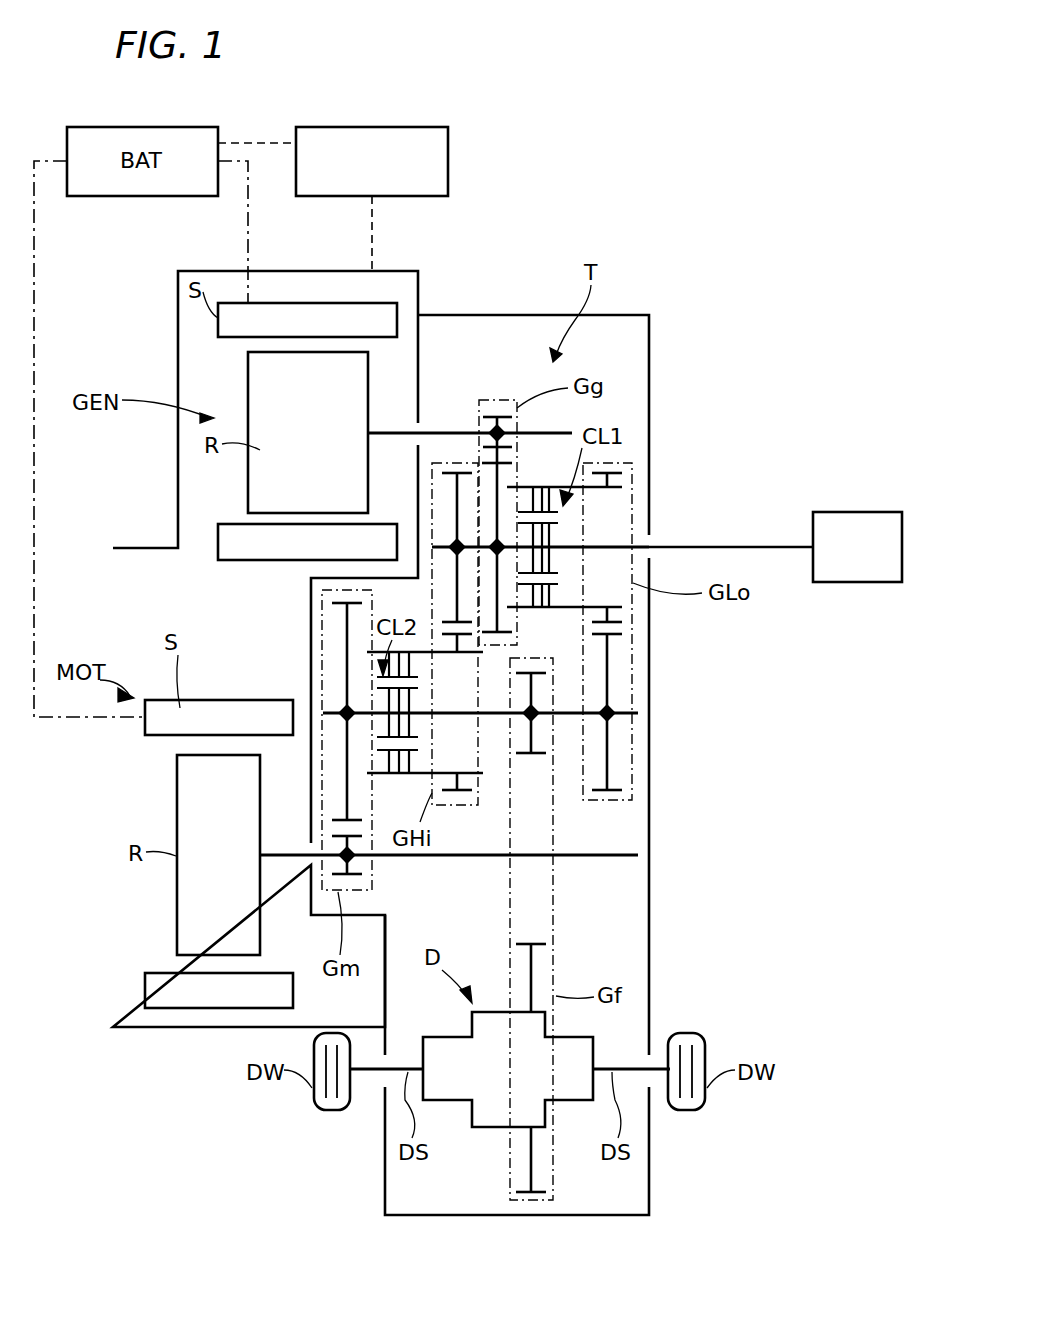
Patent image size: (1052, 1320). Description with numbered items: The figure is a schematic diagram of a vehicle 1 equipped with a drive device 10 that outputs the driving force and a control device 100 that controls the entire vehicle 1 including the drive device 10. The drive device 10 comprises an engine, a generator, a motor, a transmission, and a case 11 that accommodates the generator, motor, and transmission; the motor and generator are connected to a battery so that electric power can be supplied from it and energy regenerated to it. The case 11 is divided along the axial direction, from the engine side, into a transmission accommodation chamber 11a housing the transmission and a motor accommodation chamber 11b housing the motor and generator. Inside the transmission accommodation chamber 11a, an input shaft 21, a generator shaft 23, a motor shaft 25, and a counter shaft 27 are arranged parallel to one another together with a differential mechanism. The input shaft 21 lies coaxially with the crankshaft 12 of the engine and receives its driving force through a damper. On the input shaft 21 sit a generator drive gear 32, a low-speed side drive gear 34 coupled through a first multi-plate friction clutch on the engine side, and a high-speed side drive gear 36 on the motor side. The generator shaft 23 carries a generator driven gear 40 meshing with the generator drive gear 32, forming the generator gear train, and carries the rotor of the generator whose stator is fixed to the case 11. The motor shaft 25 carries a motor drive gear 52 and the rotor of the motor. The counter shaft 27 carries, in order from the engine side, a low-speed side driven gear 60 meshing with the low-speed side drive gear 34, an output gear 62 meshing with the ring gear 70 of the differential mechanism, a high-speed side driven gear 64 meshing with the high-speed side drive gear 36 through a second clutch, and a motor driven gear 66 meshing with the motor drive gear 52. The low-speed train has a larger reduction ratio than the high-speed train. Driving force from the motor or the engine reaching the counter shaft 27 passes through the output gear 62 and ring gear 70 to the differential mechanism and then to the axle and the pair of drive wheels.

The vehicle 1 is at (571, 153).
The drive device 10 is at (460, 284).
The case 11 is at (650, 348).
The transmission accommodation chamber 11a is at (625, 902).
The motor accommodation chamber 11b is at (148, 578).
The crankshaft 12 is at (748, 545).
The input shaft 21 is at (638, 545).
The generator shaft 23 is at (560, 430).
The motor shaft 25 is at (648, 848).
The counter shaft 27 is at (630, 728).
The generator drive gear 32 is at (505, 485).
The low-speed side drive gear 34 is at (620, 470).
The high-speed side drive gear 36 is at (448, 472).
The generator driven gear 40 is at (490, 415).
The motor drive gear 52 is at (355, 875).
The low-speed side driven gear 60 is at (622, 640).
The output gear 62 is at (540, 672).
The high-speed side driven gear 64 is at (458, 792).
The motor driven gear 66 is at (358, 602).
The ring gear 70 is at (520, 942).
The control device 100 is at (416, 127).